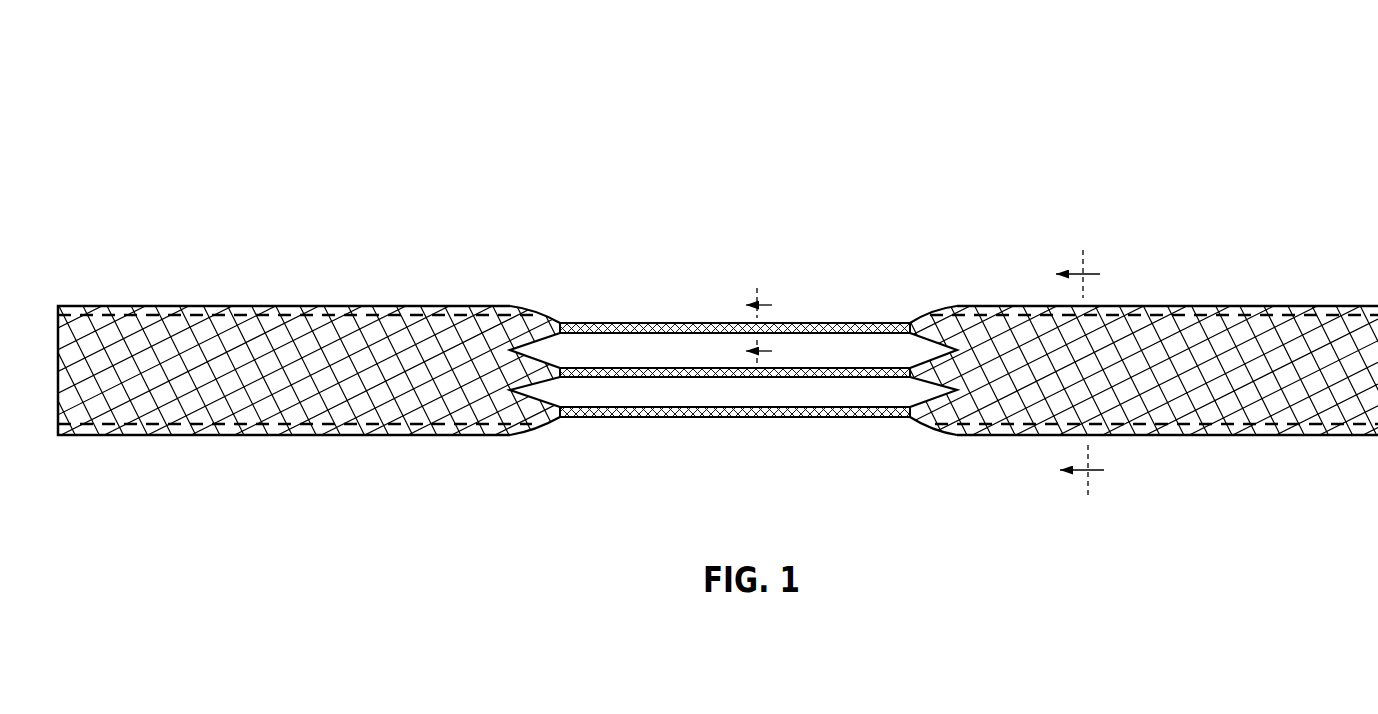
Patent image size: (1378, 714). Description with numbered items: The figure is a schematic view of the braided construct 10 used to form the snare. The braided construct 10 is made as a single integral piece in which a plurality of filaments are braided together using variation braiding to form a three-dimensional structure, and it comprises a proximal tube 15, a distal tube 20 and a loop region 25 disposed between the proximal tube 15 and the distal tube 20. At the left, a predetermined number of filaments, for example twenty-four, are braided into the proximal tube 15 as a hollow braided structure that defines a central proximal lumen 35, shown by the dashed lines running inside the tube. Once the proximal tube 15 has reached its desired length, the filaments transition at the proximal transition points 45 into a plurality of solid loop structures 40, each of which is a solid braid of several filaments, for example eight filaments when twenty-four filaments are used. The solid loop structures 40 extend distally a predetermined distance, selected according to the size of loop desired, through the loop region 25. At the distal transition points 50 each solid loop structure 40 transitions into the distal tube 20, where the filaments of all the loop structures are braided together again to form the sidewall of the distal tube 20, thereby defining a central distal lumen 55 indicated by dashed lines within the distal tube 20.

The braided construct 10 is at (170, 157).
The proximal tube 15 is at (296, 334).
The distal tube 20 is at (1154, 337).
The loop region 25 is at (930, 240).
The central proximal lumen 35 is at (199, 404).
The solid loop structures 40 is at (663, 329).
The proximal transition points 45 is at (534, 339).
The distal transition points 50 is at (921, 334).
The central distal lumen 55 is at (1218, 404).